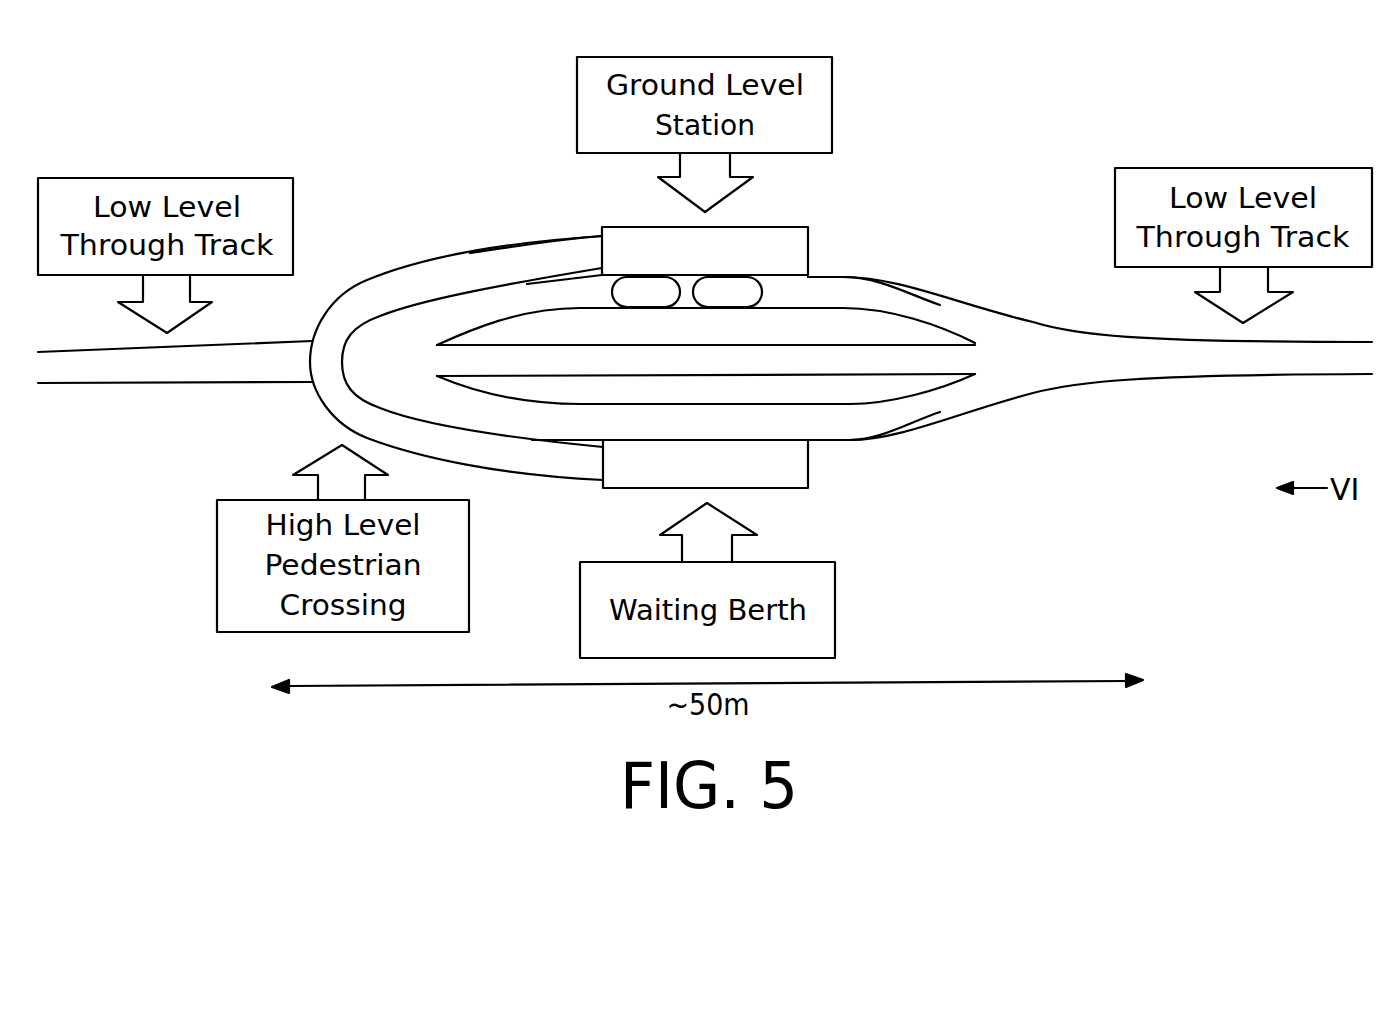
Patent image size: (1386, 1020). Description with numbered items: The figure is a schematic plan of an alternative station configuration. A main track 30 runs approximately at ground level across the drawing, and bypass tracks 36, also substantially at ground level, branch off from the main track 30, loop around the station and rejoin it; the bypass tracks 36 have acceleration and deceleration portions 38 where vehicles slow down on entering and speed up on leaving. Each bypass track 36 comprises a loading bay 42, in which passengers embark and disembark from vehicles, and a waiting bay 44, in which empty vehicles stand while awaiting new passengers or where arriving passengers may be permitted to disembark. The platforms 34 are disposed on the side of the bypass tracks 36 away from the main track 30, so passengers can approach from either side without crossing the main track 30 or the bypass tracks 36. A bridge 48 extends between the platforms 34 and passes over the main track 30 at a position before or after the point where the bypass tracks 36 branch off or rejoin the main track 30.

The main track 30 is at (170, 380).
The platform 34 is at (797, 225).
The bypass track 36 is at (840, 283).
The acceleration and deceleration portions 38 is at (437, 306).
The loading bay 42 is at (742, 285).
The waiting bay 44 is at (645, 285).
The bridge 48 is at (507, 253).